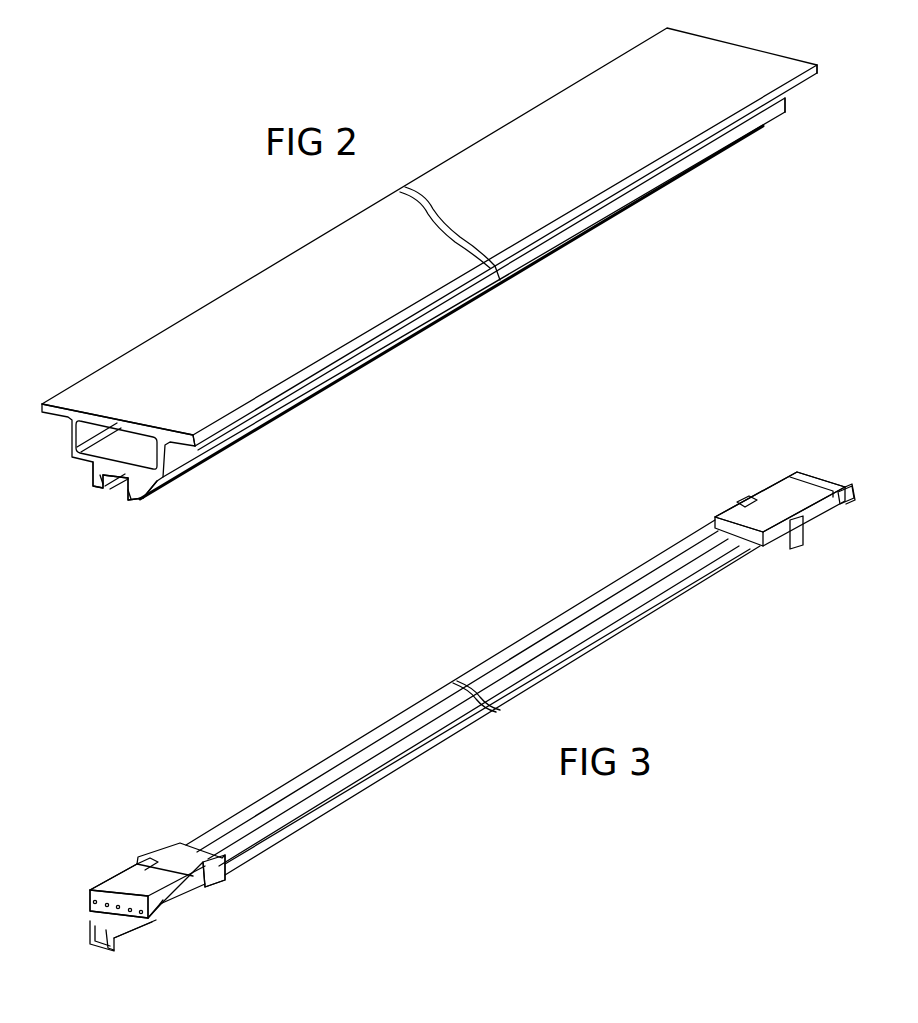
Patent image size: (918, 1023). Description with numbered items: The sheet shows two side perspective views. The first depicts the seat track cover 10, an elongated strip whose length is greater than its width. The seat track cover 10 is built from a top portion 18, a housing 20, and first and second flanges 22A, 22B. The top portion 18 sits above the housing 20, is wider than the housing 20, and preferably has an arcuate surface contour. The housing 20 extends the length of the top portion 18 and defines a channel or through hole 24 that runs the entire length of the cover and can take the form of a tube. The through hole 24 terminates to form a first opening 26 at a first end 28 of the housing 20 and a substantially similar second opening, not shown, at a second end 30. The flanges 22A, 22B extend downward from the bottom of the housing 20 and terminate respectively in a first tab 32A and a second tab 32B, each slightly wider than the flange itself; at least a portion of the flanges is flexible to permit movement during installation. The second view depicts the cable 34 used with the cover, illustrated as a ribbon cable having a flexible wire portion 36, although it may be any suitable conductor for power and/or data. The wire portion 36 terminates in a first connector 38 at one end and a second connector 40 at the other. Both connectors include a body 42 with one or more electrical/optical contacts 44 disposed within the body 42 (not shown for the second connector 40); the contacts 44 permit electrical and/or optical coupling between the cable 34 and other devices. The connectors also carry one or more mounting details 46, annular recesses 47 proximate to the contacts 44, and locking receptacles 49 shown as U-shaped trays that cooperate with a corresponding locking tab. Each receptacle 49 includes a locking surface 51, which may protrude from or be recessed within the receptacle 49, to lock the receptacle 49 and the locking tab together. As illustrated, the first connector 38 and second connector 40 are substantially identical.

In FIG. 2, the seat track cover 10 is at (422, 108).
In FIG. 2, the top portion 18 is at (137, 383).
In FIG. 2, the housing 20 is at (103, 473).
In FIG. 2, the first flange 22A is at (110, 495).
In FIG. 2, the second flange 22B is at (127, 490).
In FIG. 2, the through hole 24 is at (85, 438).
In FIG. 2, the first opening 26 is at (118, 412).
In FIG. 2, the first end 28 is at (170, 457).
In FIG. 2, the second end 30 is at (785, 97).
In FIG. 2, the first tab 32A is at (98, 482).
In FIG. 2, the second tab 32B is at (137, 500).
In FIG. 3, the cable 34 is at (428, 688).
In FIG. 3, the wire portion 36 is at (520, 698).
In FIG. 3, the first connector 38 is at (163, 860).
In FIG. 3, the second connector 40 is at (760, 487).
In FIG. 3, the body 42 is at (793, 490).
In FIG. 3, the electrical/optical contacts 44 is at (92, 900).
In FIG. 3, the mounting details 46 is at (740, 503).
In FIG. 3, the annular recesses 47 is at (845, 510).
In FIG. 3, the locking receptacles 49 is at (857, 500).
In FIG. 3, the locking surfaces 51 is at (103, 947).